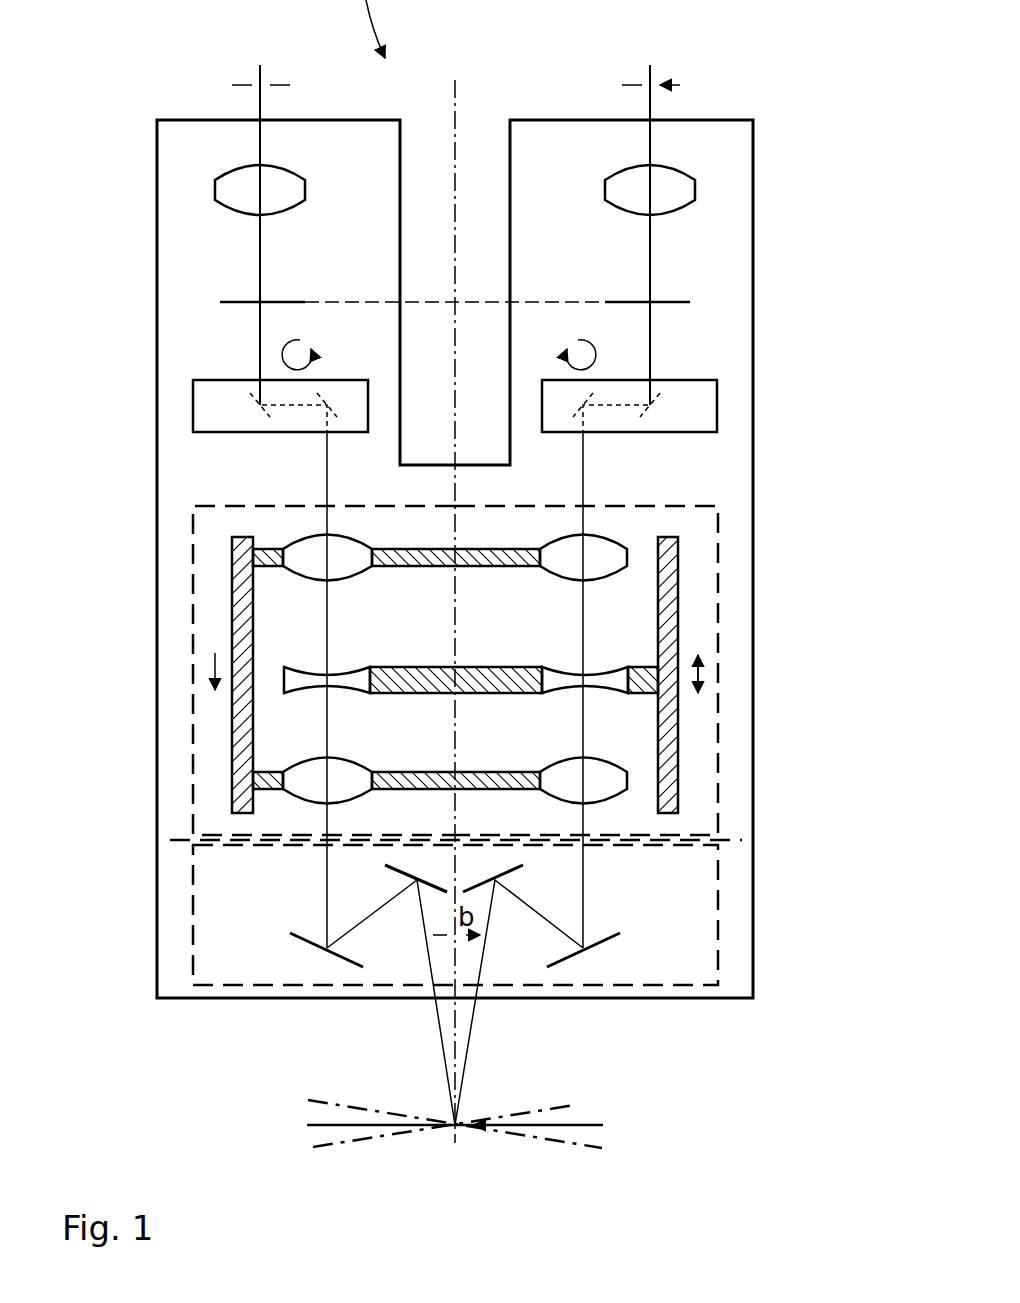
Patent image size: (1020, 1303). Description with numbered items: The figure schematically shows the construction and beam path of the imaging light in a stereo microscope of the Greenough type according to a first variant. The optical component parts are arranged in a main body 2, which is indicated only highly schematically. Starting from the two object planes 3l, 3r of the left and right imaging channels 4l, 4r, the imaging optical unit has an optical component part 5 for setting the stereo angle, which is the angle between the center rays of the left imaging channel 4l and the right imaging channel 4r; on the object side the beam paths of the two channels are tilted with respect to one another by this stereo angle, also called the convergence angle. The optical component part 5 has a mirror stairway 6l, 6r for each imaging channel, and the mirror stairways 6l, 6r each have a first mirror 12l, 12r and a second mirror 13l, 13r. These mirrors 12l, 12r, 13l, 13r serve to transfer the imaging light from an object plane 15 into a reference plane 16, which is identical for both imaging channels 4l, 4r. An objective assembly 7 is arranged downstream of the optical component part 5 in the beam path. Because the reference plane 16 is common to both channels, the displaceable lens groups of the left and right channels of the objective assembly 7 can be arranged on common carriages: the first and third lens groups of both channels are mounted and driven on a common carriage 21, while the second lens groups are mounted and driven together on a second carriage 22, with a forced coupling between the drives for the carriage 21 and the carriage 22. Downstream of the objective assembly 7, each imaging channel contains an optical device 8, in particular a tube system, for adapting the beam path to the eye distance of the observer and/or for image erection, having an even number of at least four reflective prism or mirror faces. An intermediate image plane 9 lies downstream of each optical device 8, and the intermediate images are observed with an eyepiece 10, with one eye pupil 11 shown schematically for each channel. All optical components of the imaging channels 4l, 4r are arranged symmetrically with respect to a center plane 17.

The main body 2 is at (753, 757).
The left object plane 3l is at (598, 1099).
The right object plane 3r is at (592, 1145).
The left imaging channel 4l is at (232, 504).
The right imaging channel 4r is at (680, 504).
The optical component part for setting the stereo angle 5 is at (193, 933).
The left mirror stairway 6l is at (398, 958).
The right mirror stairway 6r is at (512, 958).
The objective assembly 7 is at (193, 750).
The optical device 8 is at (205, 407).
The intermediate image plane 9 is at (220, 302).
The eyepiece 10 is at (225, 190).
The eye pupil 11 is at (262, 72).
The first mirror of left mirror stairway 12l is at (395, 870).
The first mirror of right mirror stairway 12r is at (515, 868).
The second mirror of left mirror stairway 13l is at (297, 937).
The second mirror of right mirror stairway 13r is at (612, 937).
The object plane 15 is at (603, 1125).
The reference plane 16 is at (730, 840).
The center plane 17 is at (455, 80).
The common carriage 21 is at (240, 615).
The second carriage 22 is at (670, 615).